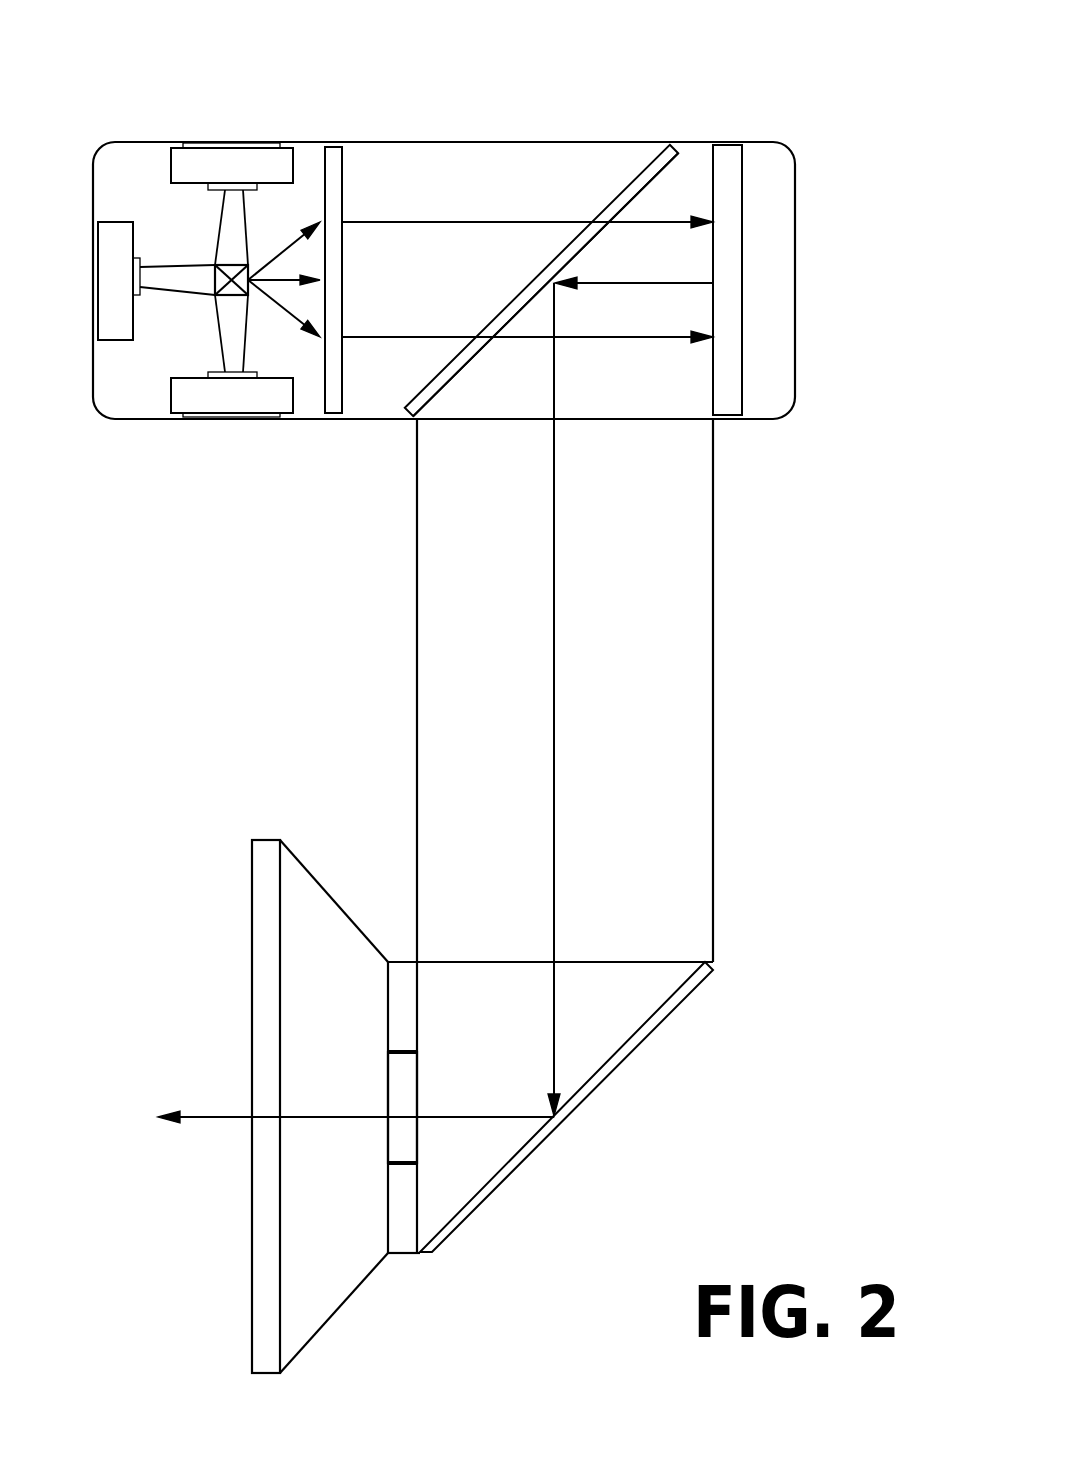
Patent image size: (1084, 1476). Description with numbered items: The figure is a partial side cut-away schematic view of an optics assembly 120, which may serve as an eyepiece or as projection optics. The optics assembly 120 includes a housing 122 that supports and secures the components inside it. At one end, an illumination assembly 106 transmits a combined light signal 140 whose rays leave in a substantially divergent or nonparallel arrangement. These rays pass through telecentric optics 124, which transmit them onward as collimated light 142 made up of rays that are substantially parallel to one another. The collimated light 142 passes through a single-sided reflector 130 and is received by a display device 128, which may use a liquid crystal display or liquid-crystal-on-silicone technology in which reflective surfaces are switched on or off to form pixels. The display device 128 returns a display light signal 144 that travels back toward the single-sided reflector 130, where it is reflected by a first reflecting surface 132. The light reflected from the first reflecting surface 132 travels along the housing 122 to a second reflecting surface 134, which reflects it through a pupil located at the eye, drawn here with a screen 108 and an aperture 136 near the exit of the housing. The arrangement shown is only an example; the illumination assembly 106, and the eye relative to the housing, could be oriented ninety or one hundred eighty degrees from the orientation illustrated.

The illumination assembly 106 is at (116, 148).
The screen 108 is at (305, 930).
The optics assembly 120 is at (604, 54).
The housing 122 is at (713, 621).
The telecentric optics 124 is at (326, 147).
The display device 128 is at (727, 157).
The single-sided reflector 130 is at (662, 143).
The first reflecting surface 132 is at (673, 170).
The second reflecting surface 134 is at (659, 1021).
The aperture 136 is at (400, 1147).
The combined light signal 140 is at (293, 243).
The collimated light 142 is at (413, 222).
The display light signal 144 is at (683, 284).